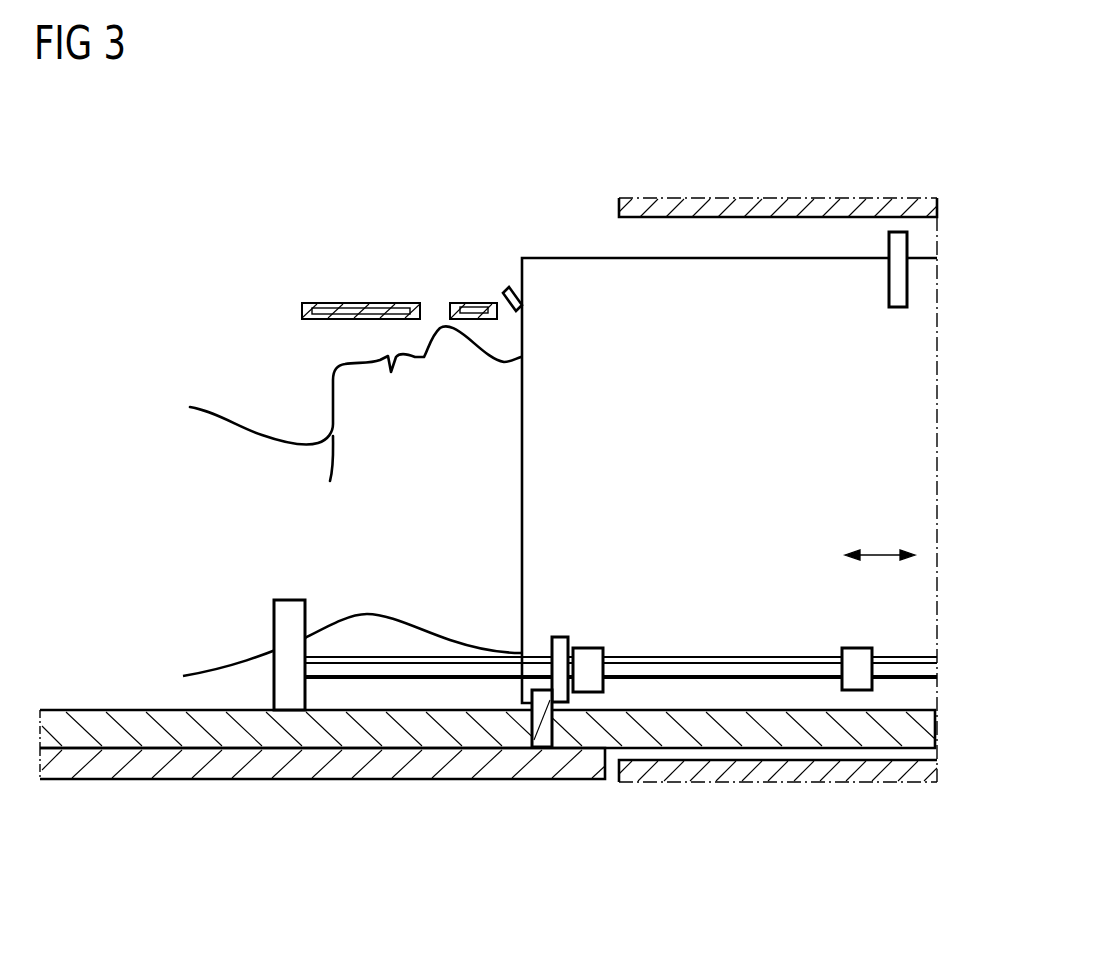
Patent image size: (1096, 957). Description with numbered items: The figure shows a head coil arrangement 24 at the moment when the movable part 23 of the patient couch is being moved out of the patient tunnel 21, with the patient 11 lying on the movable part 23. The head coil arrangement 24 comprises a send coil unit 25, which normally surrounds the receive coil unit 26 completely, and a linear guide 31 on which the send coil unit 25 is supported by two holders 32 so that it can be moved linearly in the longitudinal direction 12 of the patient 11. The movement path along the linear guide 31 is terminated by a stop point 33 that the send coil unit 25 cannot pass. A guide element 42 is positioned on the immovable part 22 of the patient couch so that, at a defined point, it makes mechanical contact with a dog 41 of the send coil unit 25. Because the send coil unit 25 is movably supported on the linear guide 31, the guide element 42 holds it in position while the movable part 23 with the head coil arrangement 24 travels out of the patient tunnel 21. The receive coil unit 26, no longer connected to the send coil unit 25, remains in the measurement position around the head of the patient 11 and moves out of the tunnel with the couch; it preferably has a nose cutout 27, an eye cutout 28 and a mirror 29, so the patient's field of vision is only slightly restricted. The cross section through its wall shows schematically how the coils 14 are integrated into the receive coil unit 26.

The patient 11 is at (213, 402).
The longitudinal direction 12 is at (880, 550).
The coils 14 is at (385, 302).
The patient tunnel 21 is at (712, 197).
The immovable part of the patient couch 22 is at (100, 766).
The movable part of the patient couch 23 is at (103, 718).
The head coil arrangement 24 is at (212, 224).
The send coil unit 25 is at (578, 257).
The receive coil unit 26 is at (322, 302).
The nose cutout 27 is at (432, 310).
The eye cutout 28 is at (497, 306).
The mirror 29 is at (506, 290).
The linear guide 31 is at (688, 656).
The holders 32 is at (590, 647).
The stop point 33 is at (290, 598).
The dog 41 is at (888, 283).
The guide element 42 is at (543, 756).